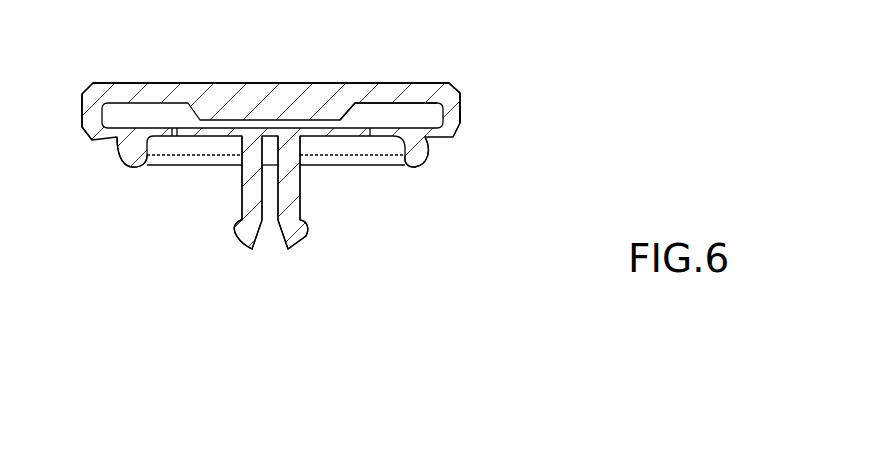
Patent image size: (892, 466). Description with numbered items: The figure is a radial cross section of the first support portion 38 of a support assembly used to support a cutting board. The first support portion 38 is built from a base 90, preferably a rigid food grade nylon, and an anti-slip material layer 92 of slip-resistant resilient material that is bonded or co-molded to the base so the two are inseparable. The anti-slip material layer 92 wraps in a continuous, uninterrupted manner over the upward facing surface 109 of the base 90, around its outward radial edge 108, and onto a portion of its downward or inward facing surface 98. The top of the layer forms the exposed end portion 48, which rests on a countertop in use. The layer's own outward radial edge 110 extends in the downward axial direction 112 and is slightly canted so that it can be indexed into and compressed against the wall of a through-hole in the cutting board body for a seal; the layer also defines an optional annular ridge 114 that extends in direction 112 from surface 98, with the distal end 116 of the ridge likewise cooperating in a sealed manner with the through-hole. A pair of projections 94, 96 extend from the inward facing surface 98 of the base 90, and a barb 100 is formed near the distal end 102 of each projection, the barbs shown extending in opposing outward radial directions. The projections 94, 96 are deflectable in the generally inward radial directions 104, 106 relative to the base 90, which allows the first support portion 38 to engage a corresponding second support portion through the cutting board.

The first support portion 38 is at (503, 58).
The exposed end portion 48 is at (195, 83).
The base 90 is at (433, 120).
The anti-slip material layer 92 is at (453, 93).
The projection 94 is at (302, 188).
The projection 96 is at (242, 188).
The inward facing surface 98 is at (188, 138).
The barb 100 is at (237, 233).
The distal end 102 is at (248, 262).
The inward radial direction 104 is at (392, 358).
The inward radial direction 106 is at (263, 358).
The outward radial edge 108 is at (95, 97).
The upward facing surface 109 is at (370, 103).
The outward radial edge 110 is at (462, 125).
The downward axial direction 112 is at (551, 167).
The annular ridge 114 is at (422, 167).
The distal end 116 is at (132, 167).